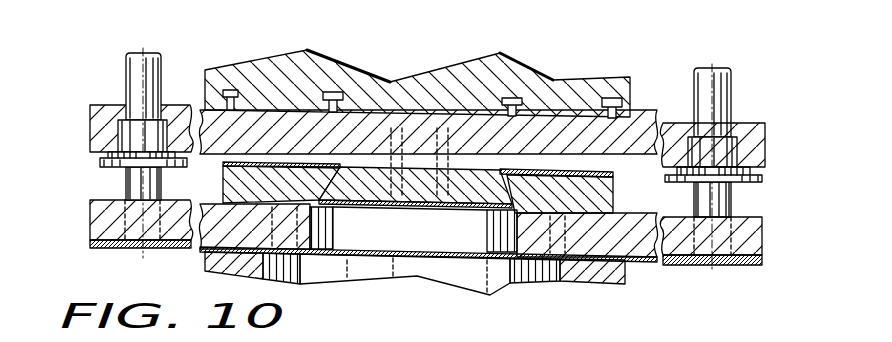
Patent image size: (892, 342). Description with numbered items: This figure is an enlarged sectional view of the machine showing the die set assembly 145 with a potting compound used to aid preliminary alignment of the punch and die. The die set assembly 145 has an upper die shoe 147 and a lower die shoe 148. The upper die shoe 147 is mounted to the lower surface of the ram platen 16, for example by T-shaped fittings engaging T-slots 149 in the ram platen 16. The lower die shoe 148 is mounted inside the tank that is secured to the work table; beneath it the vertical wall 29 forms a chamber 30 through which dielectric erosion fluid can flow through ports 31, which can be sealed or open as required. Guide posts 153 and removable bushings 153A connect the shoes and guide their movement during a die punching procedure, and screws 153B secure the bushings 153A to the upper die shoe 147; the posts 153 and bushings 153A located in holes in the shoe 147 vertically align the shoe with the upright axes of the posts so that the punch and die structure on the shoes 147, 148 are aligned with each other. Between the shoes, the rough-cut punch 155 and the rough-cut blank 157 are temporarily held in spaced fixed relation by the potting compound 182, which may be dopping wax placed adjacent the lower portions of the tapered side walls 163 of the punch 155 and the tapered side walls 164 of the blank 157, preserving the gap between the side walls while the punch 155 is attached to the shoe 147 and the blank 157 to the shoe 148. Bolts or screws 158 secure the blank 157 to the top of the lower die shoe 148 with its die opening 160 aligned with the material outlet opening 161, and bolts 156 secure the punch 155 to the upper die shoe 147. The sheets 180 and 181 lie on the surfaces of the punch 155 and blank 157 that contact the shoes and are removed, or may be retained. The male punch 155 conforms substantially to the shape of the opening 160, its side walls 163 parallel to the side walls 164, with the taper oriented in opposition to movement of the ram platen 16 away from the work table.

The ram platen 16 is at (598, 88).
The vertical wall 29 is at (610, 283).
The chamber 30 is at (493, 291).
The ports 31 is at (417, 254).
The die set assembly 145 is at (751, 116).
The upper die shoe 147 is at (637, 130).
The lower die shoe 148 is at (637, 250).
The T-slots 149 is at (232, 88).
The guide posts 153 is at (142, 52).
The removable bushings 153A is at (121, 171).
The screws 153B is at (101, 166).
The rough-cut punch 155 is at (330, 187).
The bolts 156 is at (413, 229).
The rough-cut blank 157 is at (600, 170).
The bolts or screws 158 is at (295, 281).
The die opening 160 is at (376, 234).
The material outlet opening 161 is at (452, 247).
The tapered side walls 163 is at (522, 157).
The tapered side walls 164 is at (337, 174).
The sheet 180 is at (606, 176).
The sheet 181 is at (462, 213).
The potting compound 182 is at (334, 210).